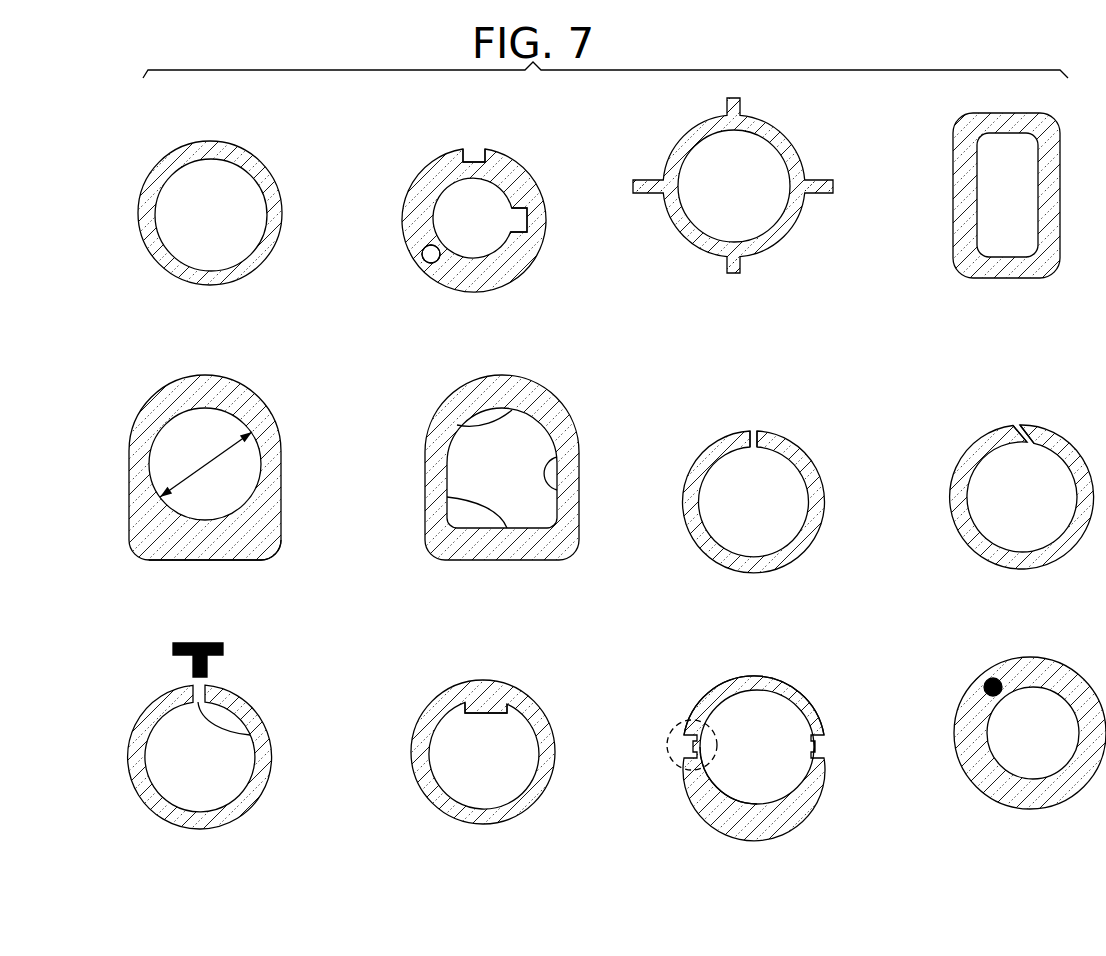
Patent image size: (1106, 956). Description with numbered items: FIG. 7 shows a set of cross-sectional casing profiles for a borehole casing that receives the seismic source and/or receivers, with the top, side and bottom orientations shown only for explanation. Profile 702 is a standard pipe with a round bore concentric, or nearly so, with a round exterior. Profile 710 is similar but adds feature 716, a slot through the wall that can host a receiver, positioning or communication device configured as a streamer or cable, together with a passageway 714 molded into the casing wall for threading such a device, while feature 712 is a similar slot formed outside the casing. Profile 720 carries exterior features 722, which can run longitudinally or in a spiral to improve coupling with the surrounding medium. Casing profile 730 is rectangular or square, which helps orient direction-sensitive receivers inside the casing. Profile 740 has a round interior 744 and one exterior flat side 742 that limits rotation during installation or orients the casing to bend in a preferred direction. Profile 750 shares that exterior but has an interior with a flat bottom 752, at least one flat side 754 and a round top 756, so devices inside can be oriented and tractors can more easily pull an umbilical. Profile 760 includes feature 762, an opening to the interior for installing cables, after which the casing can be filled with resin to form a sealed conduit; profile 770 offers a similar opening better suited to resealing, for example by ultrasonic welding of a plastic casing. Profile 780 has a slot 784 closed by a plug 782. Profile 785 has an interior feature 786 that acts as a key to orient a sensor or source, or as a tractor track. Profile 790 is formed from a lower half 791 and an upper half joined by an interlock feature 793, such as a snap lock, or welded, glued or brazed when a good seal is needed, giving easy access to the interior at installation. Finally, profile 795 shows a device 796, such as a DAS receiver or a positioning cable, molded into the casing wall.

The standard pipe profile 702 is at (180, 326).
The casing profile with slot 710 is at (450, 328).
The exterior slot feature 712 is at (473, 160).
The passageway 714 is at (427, 263).
The slot feature 716 is at (518, 218).
The casing profile with exterior features 720 is at (720, 328).
The exterior coupling feature 722 is at (740, 103).
The rectangular casing profile 730 is at (984, 329).
The casing profile with flat side 740 is at (180, 611).
The exterior flat side 742 is at (262, 545).
The round interior 744 is at (198, 467).
The casing profile with shaped interior 750 is at (464, 613).
The flat bottom 752 is at (442, 498).
The flat side 754 is at (560, 460).
The round top 756 is at (460, 425).
The casing profile with opening 760 is at (732, 613).
The opening 762 is at (750, 442).
The resealable casing profile 770 is at (984, 616).
The casing profile with slot and plug 780 is at (180, 868).
The plug 782 is at (207, 660).
The slot 784 is at (250, 735).
The casing profile with interior key 785 is at (449, 871).
The interior key feature 786 is at (500, 708).
The two-half casing profile 790 is at (722, 869).
The lower half 791 is at (715, 802).
The interlock feature 793 is at (675, 728).
The casing profile with molded device 795 is at (984, 871).
The molded device 796 is at (988, 682).